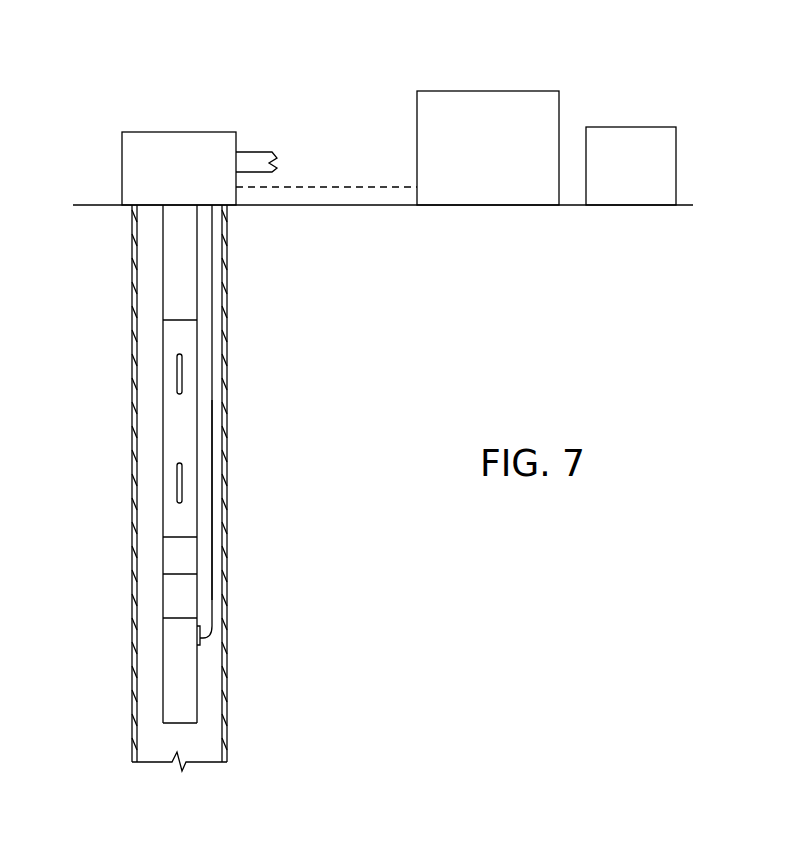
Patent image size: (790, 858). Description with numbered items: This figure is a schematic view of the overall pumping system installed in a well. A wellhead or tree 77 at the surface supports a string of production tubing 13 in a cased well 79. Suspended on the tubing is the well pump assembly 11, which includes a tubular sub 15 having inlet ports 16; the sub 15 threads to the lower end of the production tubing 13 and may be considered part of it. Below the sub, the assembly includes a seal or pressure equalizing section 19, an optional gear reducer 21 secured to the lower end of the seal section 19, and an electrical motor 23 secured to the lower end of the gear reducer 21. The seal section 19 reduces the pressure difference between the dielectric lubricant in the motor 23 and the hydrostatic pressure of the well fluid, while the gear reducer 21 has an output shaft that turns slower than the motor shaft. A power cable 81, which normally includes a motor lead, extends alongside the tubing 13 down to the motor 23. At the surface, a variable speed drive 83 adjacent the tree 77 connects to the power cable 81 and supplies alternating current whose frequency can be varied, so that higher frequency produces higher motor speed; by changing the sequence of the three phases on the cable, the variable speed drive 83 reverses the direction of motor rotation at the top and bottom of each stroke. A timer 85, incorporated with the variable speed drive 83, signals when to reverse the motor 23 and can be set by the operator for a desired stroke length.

The well pump assembly 11 is at (137, 331).
The production tubing 13 is at (161, 268).
The tubular sub 15 is at (162, 433).
The inlet ports 16 is at (177, 375).
The seal section 19 is at (162, 562).
The gear reducer 21 is at (162, 597).
The electrical motor 23 is at (162, 667).
The wellhead or tree 77 is at (122, 168).
The cased well 79 is at (213, 333).
The power cable 81 is at (213, 518).
The variable speed drive 83 is at (521, 91).
The timer 85 is at (645, 127).